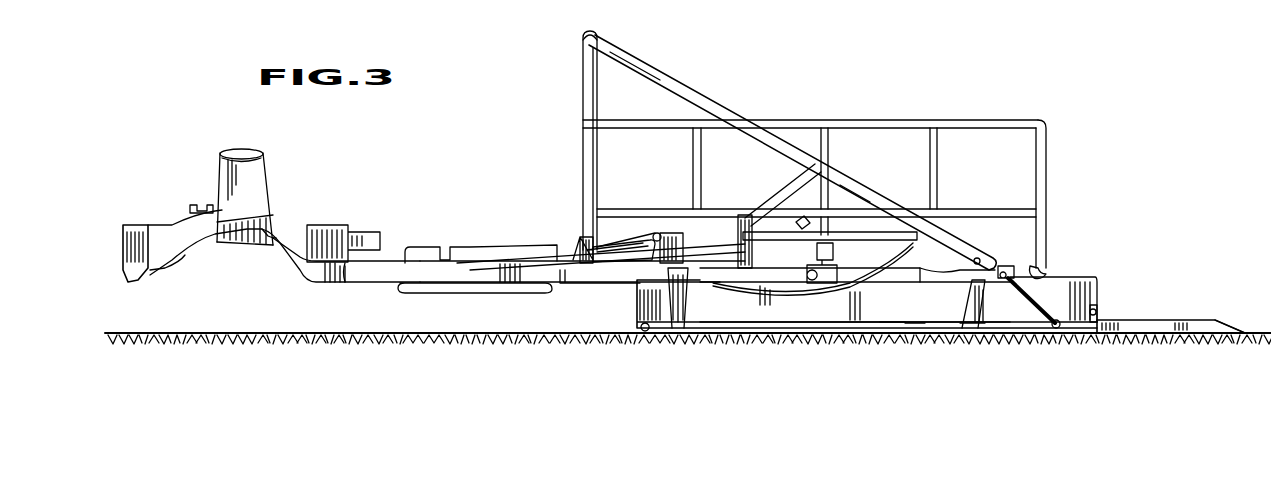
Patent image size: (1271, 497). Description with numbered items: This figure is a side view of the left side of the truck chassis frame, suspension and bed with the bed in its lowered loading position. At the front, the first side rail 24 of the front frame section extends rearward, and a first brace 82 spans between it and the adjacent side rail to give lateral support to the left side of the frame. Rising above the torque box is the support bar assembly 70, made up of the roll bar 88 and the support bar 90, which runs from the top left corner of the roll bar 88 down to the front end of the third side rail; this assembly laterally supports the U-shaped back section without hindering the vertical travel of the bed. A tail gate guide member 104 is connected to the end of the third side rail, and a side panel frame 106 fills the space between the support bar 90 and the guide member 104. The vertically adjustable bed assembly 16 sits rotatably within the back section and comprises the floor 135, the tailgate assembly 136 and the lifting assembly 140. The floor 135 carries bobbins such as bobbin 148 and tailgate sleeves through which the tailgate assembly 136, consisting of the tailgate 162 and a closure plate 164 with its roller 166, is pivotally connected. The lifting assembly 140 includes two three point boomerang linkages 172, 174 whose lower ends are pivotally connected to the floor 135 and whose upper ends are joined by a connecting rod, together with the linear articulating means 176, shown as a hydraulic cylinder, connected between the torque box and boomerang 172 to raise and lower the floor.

The bed assembly 16 is at (839, 355).
The first side rail 24 is at (390, 262).
The support bar assembly 70 is at (584, 29).
The first brace 82 is at (580, 285).
The roll bar 88 is at (583, 80).
The support bar 90 is at (703, 108).
The tail gate guide member 104 is at (1047, 132).
The side panel frame 106 is at (997, 118).
The floor 135 is at (791, 333).
The lifting assembly 140 is at (893, 337).
The bobbin 148 is at (1050, 333).
The tailgate 162 is at (1185, 330).
The closure plate 164 is at (1003, 283).
The roller 166 is at (1100, 320).
The boomerang 172 is at (690, 305).
The boomerang 174 is at (975, 308).
The linear articulating means 176 is at (607, 243).
The tailgate assembly 136 is at (1205, 335).